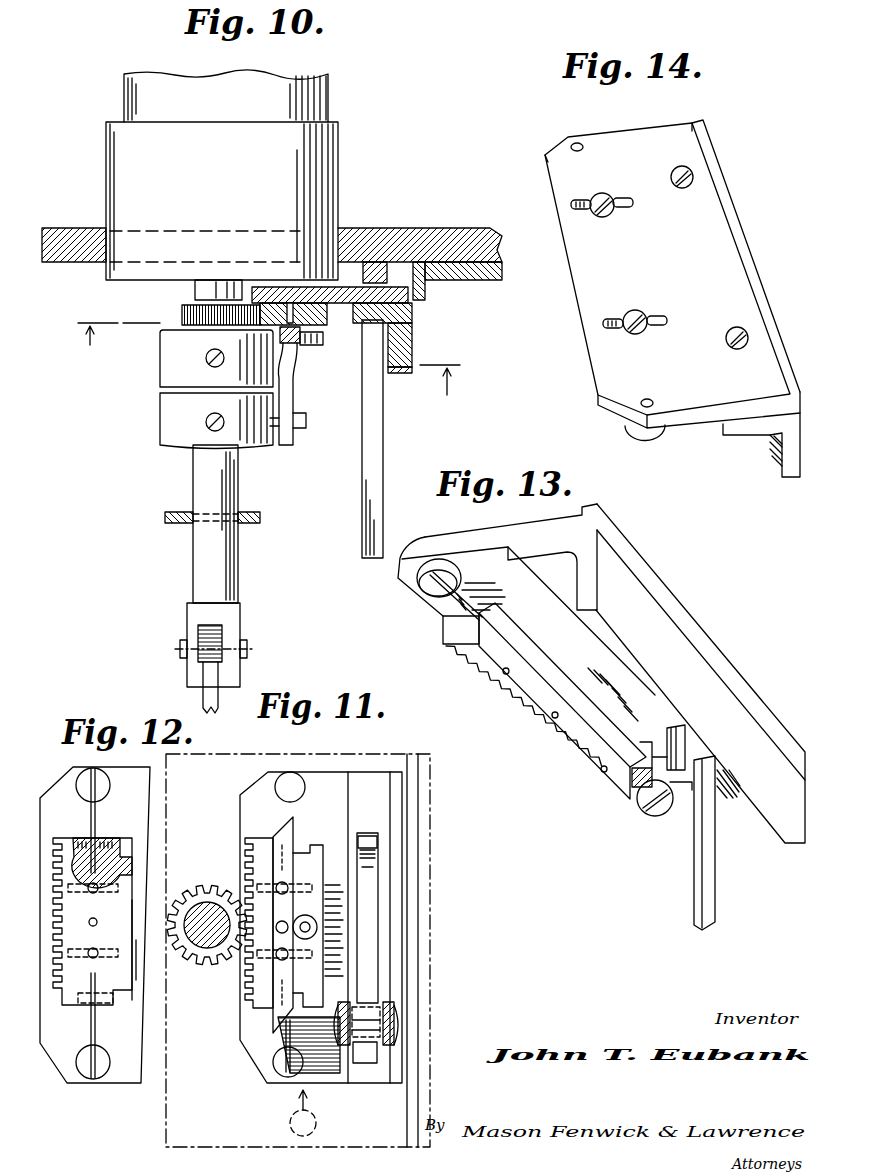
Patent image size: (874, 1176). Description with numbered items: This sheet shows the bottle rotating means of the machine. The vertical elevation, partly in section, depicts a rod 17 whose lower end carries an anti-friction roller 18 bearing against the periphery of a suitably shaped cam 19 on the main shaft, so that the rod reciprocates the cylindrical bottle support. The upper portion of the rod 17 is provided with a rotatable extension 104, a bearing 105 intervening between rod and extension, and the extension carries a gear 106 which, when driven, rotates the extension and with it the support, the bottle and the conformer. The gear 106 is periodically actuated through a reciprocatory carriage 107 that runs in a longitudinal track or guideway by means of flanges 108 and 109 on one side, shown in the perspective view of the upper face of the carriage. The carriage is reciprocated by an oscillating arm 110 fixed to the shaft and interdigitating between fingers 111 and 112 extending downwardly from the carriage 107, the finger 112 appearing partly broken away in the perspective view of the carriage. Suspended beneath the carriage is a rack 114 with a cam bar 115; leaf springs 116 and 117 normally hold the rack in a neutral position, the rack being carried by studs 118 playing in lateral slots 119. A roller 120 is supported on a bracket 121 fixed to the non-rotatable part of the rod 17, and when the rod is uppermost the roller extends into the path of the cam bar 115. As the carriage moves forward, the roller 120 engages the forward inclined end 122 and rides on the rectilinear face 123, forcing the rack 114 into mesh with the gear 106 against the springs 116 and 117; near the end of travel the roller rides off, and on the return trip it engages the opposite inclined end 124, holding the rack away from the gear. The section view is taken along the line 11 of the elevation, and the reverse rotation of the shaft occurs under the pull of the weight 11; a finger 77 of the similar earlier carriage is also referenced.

In FIG. 10, the weight 11 is at (100, 359).
In FIG. 10, the rod 17 is at (195, 480).
In FIG. 10, the anti-friction roller 18 is at (224, 642).
In FIG. 10, the cam 19 is at (204, 702).
In FIG. 11, the finger 77 is at (372, 990).
In FIG. 10, the rotatable extension 104 is at (196, 292).
In FIG. 10, the bearing 105 is at (165, 375).
In FIG. 10, the gear 106 is at (182, 315).
In FIG. 11, the gear 106 is at (207, 890).
In FIG. 14, the reciprocatory carriage 107 is at (688, 420).
In FIG. 14, the flange 108 is at (703, 140).
In FIG. 13, the flange 108 is at (606, 519).
In FIG. 14, the flange 109 is at (783, 466).
In FIG. 13, the flange 109 is at (615, 575).
In FIG. 13, the oscillating arm 110 is at (470, 560).
In FIG. 11, the oscillating arm 110 is at (335, 780).
In FIG. 12, the oscillating arm 110 is at (140, 780).
In FIG. 13, the finger 111 is at (708, 832).
In FIG. 13, the finger 112 is at (678, 726).
In FIG. 10, the rack 114 is at (322, 318).
In FIG. 13, the rack 114 is at (586, 772).
In FIG. 11, the rack 114 is at (250, 996).
In FIG. 12, the rack 114 is at (72, 838).
In FIG. 13, the cam bar 115 is at (570, 730).
In FIG. 10, the leaf spring 116 is at (330, 153).
In FIG. 13, the leaf spring 116 is at (445, 606).
In FIG. 11, the leaf spring 116 is at (290, 805).
In FIG. 12, the leaf spring 116 is at (97, 818).
In FIG. 14, the leaf spring 117 is at (648, 441).
In FIG. 13, the leaf spring 117 is at (652, 816).
In FIG. 11, the leaf spring 117 is at (290, 1040).
In FIG. 12, the leaf spring 117 is at (97, 1025).
In FIG. 14, the stud 118 is at (571, 205).
In FIG. 14, the lateral slot 119 is at (603, 324).
In FIG. 10, the roller 120 is at (323, 338).
In FIG. 11, the roller 120 is at (318, 928).
In FIG. 10, the bracket 121 is at (296, 370).
In FIG. 11, the forward inclined end 122 is at (290, 1020).
In FIG. 10, the rectilinear face 123 is at (292, 343).
In FIG. 11, the rectilinear face 123 is at (296, 830).
In FIG. 11, the opposite inclined end 124 is at (268, 833).